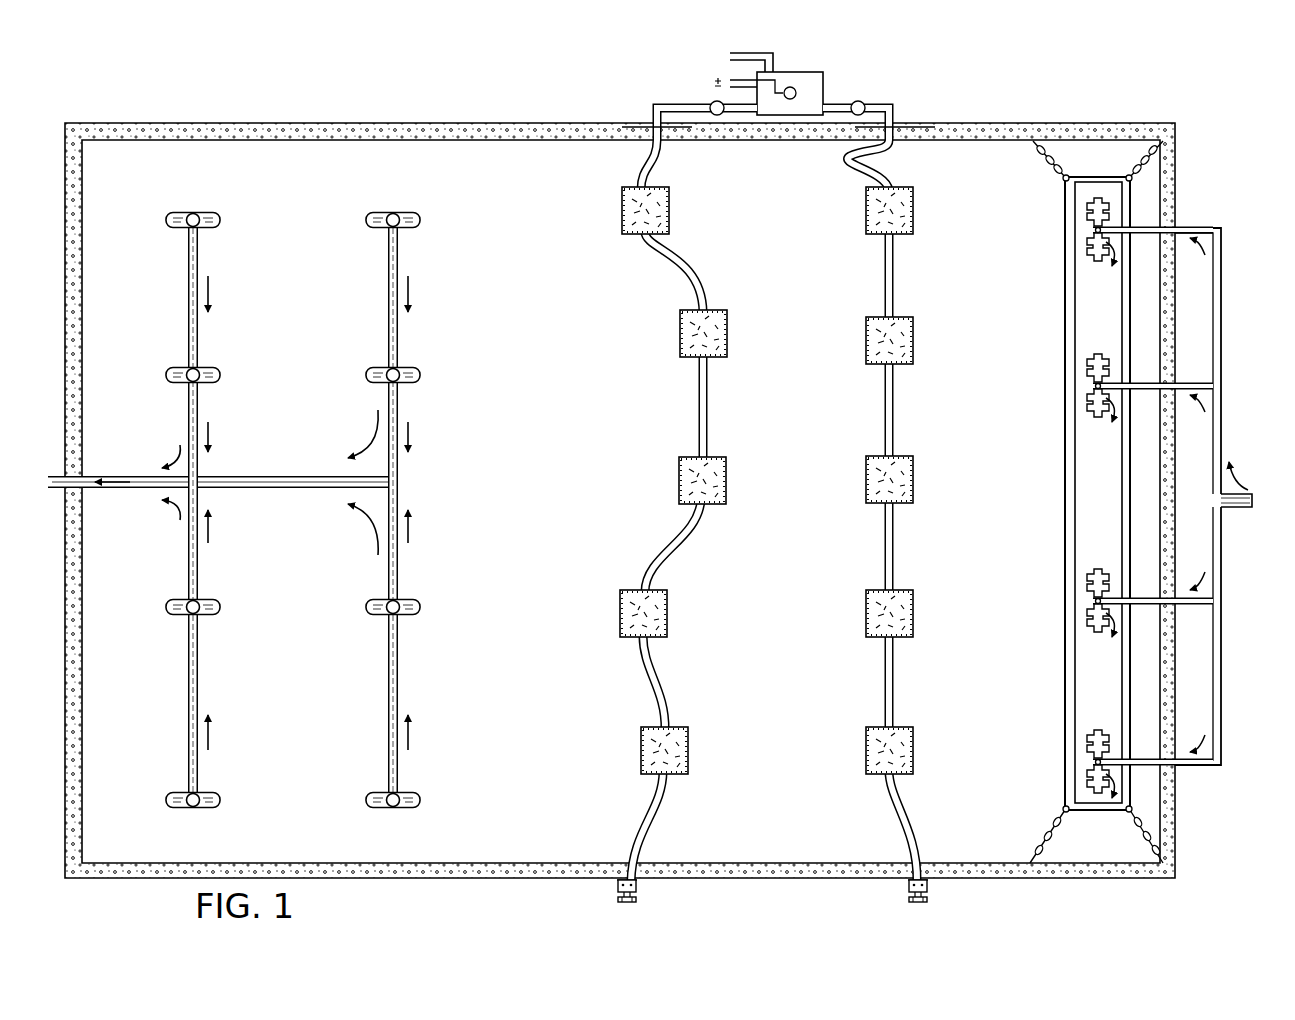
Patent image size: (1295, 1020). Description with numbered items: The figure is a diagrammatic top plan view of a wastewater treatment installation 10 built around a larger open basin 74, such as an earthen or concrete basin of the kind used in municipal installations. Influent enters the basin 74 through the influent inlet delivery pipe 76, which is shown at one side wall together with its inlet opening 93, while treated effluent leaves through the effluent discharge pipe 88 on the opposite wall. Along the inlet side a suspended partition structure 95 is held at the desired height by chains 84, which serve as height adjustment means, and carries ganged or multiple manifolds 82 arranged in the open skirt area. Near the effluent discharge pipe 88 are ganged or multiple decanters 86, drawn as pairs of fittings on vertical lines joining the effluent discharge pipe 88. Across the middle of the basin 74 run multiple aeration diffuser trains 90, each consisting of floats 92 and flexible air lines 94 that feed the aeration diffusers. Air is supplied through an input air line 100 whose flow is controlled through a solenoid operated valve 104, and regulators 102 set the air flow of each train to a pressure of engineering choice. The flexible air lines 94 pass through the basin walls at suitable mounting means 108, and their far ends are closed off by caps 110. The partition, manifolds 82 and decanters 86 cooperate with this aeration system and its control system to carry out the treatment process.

The heating system / building 10 is at (65, 306).
The open basin 74 is at (799, 675).
The influent inlet delivery pipe 76 is at (1229, 496).
The ganged or multiple manifolds 82 is at (1097, 264).
The chains 84 is at (1136, 154).
The ganged or multiple decanters 86 is at (368, 225).
The effluent discharge pipe 88 is at (157, 478).
The aeration diffuser trains 90 is at (782, 479).
The floats 92 is at (910, 367).
The air inlet 93 is at (1231, 540).
The flexible air lines 94 is at (845, 154).
The suspended duct 95 is at (1063, 478).
The input air line 100 is at (712, 60).
The regulators 102 is at (712, 103).
The solenoid operated valve 104 is at (817, 92).
The mounting means 108 is at (905, 129).
The caps 110 is at (617, 897).